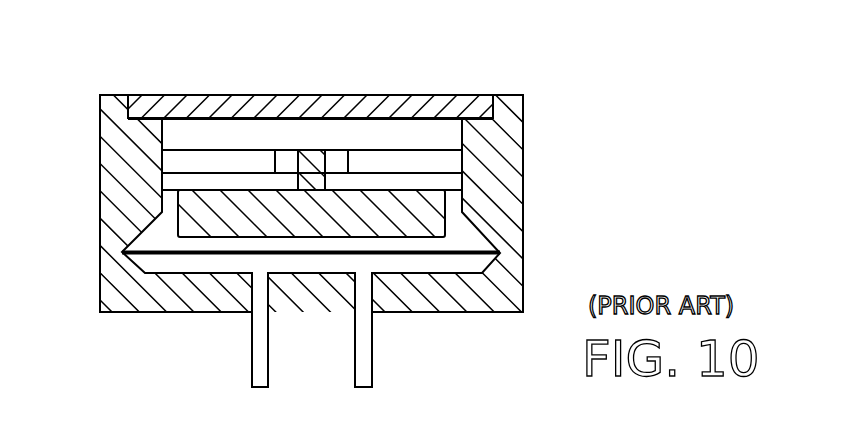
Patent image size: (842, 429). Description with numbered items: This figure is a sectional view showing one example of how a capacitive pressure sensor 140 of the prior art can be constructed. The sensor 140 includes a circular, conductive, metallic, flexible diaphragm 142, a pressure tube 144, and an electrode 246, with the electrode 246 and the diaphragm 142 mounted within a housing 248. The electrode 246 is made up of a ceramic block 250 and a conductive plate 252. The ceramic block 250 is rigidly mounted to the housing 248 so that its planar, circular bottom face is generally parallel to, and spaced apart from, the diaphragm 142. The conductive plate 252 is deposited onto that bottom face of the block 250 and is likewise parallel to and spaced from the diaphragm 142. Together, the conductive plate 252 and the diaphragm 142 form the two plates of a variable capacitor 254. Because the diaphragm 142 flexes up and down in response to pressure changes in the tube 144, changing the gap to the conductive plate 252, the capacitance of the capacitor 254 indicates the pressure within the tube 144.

The capacitive pressure sensor 140 is at (578, 138).
The diaphragm 142 is at (335, 255).
The pressure tube 144 is at (251, 363).
The electrode 246 is at (400, 190).
The housing 248 is at (100, 140).
The ceramic block 250 is at (216, 190).
The conductive plate 252 is at (285, 238).
The variable capacitor 254 is at (418, 238).